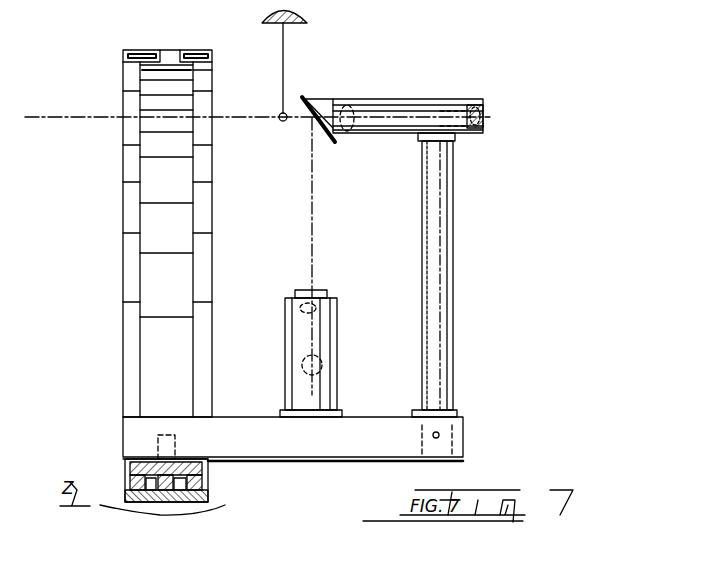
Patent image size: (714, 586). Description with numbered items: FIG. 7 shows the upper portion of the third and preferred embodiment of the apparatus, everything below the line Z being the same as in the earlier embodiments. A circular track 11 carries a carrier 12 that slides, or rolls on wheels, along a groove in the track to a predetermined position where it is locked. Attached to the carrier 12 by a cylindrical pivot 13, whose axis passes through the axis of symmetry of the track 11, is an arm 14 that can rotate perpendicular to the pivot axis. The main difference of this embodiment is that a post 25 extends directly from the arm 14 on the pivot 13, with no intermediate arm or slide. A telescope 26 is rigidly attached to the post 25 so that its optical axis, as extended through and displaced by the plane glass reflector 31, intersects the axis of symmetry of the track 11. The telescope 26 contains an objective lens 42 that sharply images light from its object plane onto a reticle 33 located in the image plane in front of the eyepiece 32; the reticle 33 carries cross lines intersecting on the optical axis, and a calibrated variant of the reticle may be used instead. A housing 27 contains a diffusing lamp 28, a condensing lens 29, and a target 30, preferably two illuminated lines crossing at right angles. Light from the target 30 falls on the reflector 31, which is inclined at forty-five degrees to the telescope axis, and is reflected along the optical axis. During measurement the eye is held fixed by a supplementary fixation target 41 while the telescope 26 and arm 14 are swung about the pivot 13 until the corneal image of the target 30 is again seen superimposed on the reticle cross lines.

The circular track 11 is at (124, 172).
The carrier 12 is at (193, 467).
The cylindrical pivot 13 is at (178, 437).
The arm 14 is at (376, 416).
The post 25 is at (445, 219).
The telescope 26 is at (413, 133).
The housing 27 is at (327, 341).
The diffusing lamp 28 is at (322, 366).
The condensing lens 29 is at (316, 307).
The target 30 is at (318, 290).
The plane glass reflector 31 is at (322, 140).
The eyepiece 32 is at (483, 100).
The reticle 33 is at (459, 108).
The supplementary fixation target 41 is at (283, 122).
The objective lens 42 is at (352, 106).